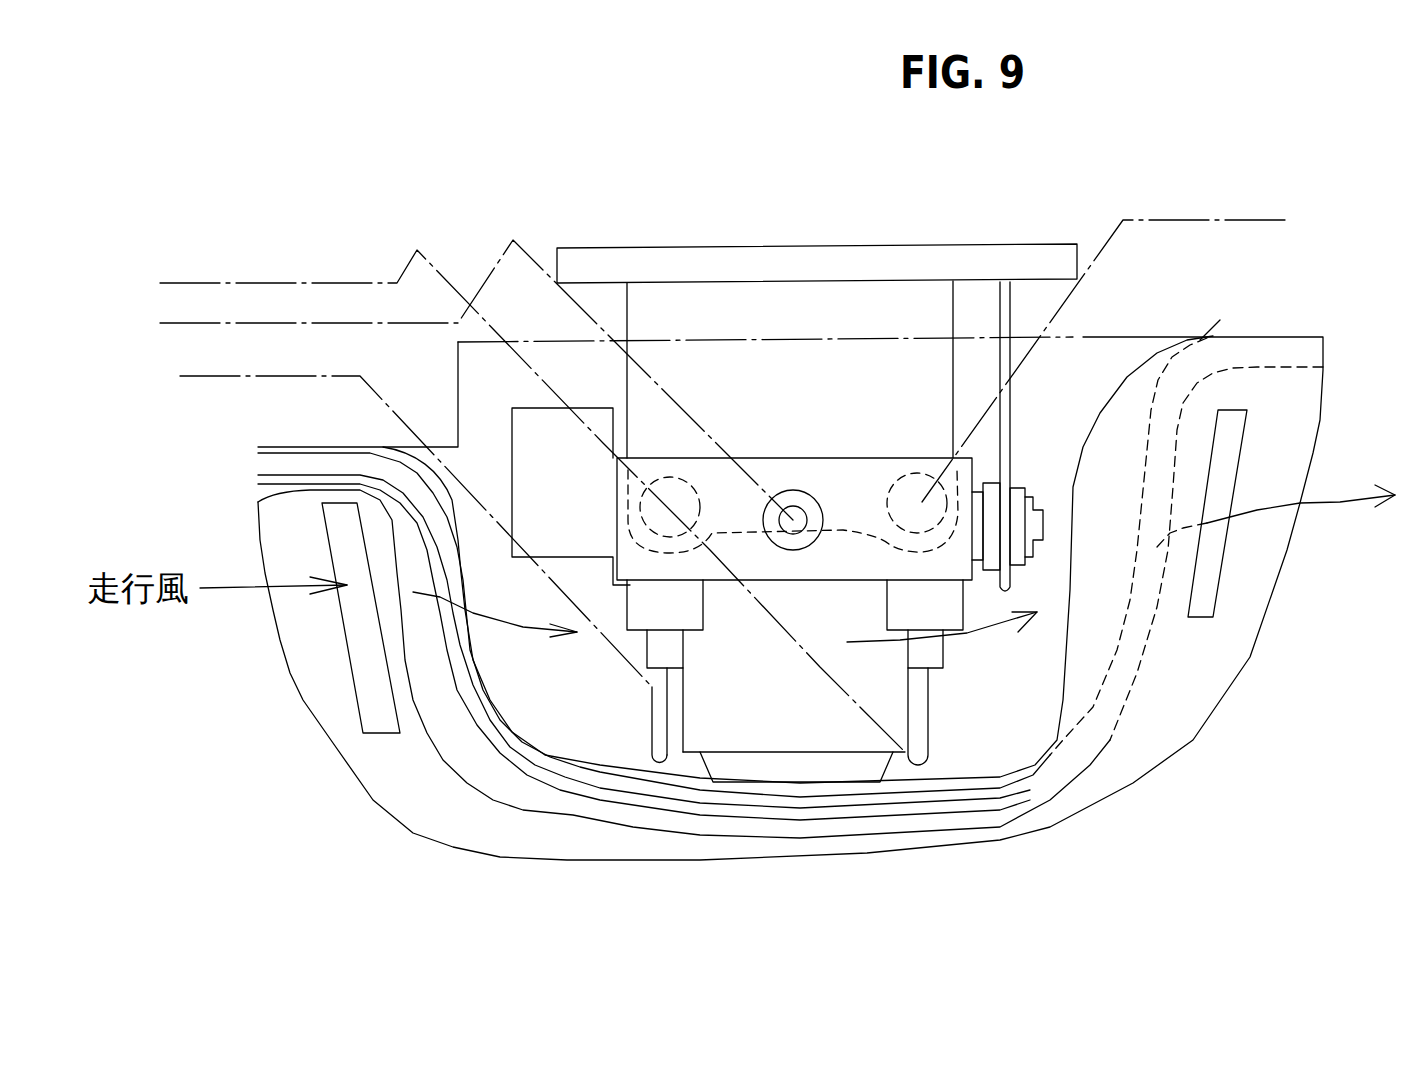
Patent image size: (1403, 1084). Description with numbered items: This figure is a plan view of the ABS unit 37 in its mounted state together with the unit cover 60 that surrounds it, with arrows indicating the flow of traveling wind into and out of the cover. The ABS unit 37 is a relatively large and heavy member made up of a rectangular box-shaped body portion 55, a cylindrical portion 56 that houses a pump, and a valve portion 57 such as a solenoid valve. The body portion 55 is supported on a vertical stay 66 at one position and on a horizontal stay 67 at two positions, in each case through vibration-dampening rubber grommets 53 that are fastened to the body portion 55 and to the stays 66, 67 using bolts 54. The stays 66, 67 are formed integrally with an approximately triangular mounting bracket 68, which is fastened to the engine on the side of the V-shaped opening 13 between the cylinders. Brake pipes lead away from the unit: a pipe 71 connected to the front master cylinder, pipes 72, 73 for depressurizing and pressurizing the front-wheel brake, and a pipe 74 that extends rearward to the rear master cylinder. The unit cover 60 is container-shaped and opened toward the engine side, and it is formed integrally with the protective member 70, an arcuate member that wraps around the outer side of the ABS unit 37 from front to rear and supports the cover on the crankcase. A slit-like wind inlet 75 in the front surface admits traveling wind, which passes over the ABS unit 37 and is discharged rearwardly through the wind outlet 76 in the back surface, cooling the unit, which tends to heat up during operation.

The V-shaped space 13 is at (568, 188).
The ABS unit 37 is at (848, 447).
The vibration-dampening rubber grommet 53 is at (1013, 482).
The bolt 54 is at (1047, 507).
The body portion 55 is at (797, 465).
The cylindrical portion 56 is at (773, 740).
The valve portion 57 is at (512, 440).
The unit cover 60 is at (442, 815).
The vertical stay 66 is at (1007, 397).
The horizontal stay 67 is at (817, 317).
The mounting bracket 68 is at (700, 247).
The protective member 70 is at (570, 780).
The pipe 71 is at (454, 380).
The pipe for depressurizing 72 is at (393, 523).
The pipe for pressurizing 73 is at (510, 501).
The pipe 74 is at (1126, 347).
The wind inlet 75 is at (347, 633).
The wind outlet 76 is at (1217, 583).